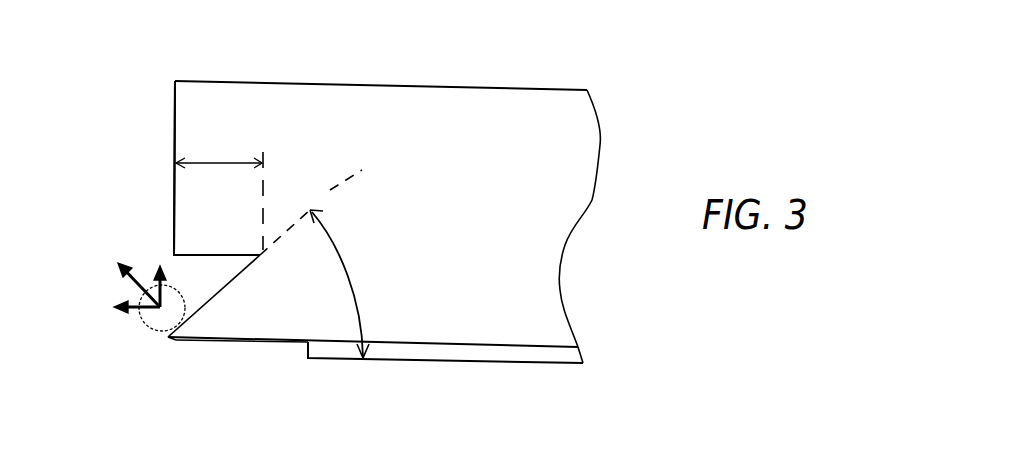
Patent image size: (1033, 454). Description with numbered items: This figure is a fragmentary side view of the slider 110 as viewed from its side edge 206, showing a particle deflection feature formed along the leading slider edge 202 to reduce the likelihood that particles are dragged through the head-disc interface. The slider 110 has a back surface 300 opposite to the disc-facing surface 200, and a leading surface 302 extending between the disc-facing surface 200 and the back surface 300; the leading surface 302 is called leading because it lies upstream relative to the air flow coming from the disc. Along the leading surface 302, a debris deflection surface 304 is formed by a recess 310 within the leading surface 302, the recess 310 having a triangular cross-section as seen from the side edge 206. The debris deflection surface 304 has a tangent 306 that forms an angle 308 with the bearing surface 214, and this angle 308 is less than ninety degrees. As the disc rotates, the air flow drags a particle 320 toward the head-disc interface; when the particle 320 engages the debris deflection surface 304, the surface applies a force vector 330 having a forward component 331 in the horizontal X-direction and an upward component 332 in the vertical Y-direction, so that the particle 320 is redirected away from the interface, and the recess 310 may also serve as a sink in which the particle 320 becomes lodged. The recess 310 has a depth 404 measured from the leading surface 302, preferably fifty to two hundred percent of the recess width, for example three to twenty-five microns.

The slider 110 is at (558, 70).
The disc-facing surface 200 is at (284, 352).
The leading slider edge 202 is at (168, 341).
The side edge 206 is at (527, 200).
The bearing surface 214 is at (468, 363).
The back surface 300 is at (389, 75).
The leading surface 302 is at (175, 138).
The debris deflection surface 304 is at (220, 292).
The tangent 306 is at (348, 185).
The angle 308 is at (345, 253).
The recess 310 is at (227, 257).
The particle 320 is at (143, 325).
The force vector 330 is at (130, 283).
The forward component 331 is at (128, 313).
The upward component 332 is at (167, 280).
The depth 404 is at (217, 163).